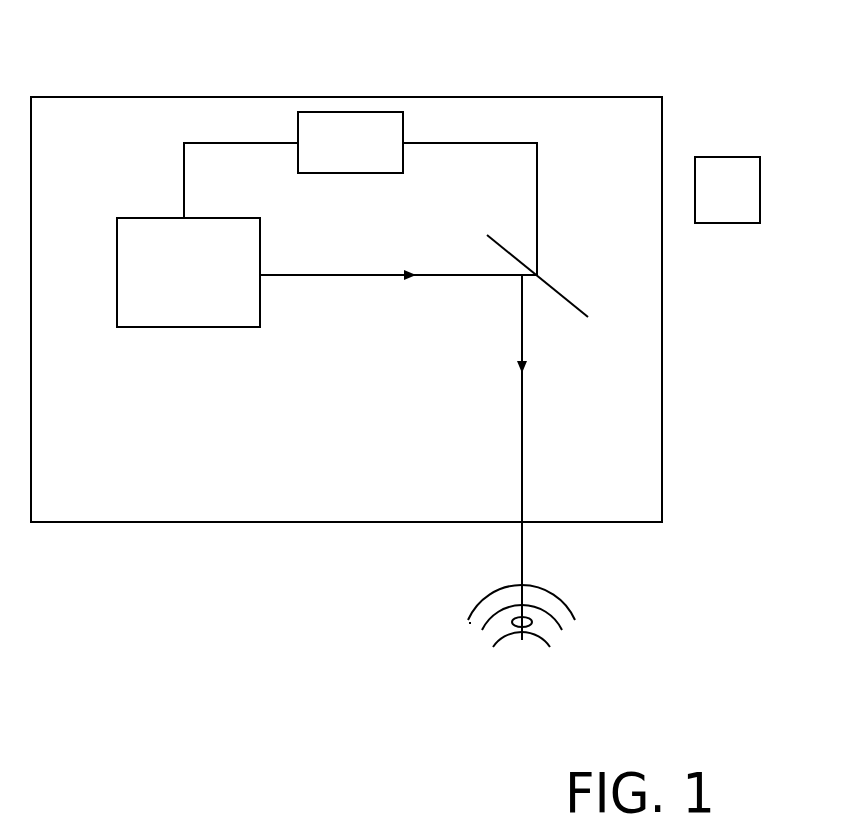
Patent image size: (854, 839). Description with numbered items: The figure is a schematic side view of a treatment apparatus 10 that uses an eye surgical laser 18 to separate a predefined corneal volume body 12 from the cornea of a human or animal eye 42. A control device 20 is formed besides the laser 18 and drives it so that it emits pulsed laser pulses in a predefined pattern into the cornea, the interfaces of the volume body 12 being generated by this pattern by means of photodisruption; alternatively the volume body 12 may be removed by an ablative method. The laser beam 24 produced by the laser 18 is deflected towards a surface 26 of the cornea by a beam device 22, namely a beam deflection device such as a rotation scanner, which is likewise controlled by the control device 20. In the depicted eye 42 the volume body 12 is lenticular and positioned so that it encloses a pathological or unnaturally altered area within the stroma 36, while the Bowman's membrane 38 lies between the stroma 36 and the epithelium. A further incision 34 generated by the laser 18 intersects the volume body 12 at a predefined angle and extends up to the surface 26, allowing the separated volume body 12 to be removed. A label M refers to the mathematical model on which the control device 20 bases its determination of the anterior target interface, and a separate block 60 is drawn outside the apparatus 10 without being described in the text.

The treatment apparatus 10 is at (560, 97).
The volume body 12 is at (522, 640).
The eye surgical laser 18 is at (188, 272).
The control device 20 is at (360, 193).
The beam device 22 is at (560, 291).
The laser beam 24 is at (364, 275).
The surface of the cornea 26 is at (535, 626).
The incision 34 is at (562, 628).
The stroma 36 is at (557, 637).
The Bowman's membrane 38 is at (470, 615).
The eye 42 is at (477, 640).
The external device 60 is at (730, 157).
The mathematical model M is at (380, 147).